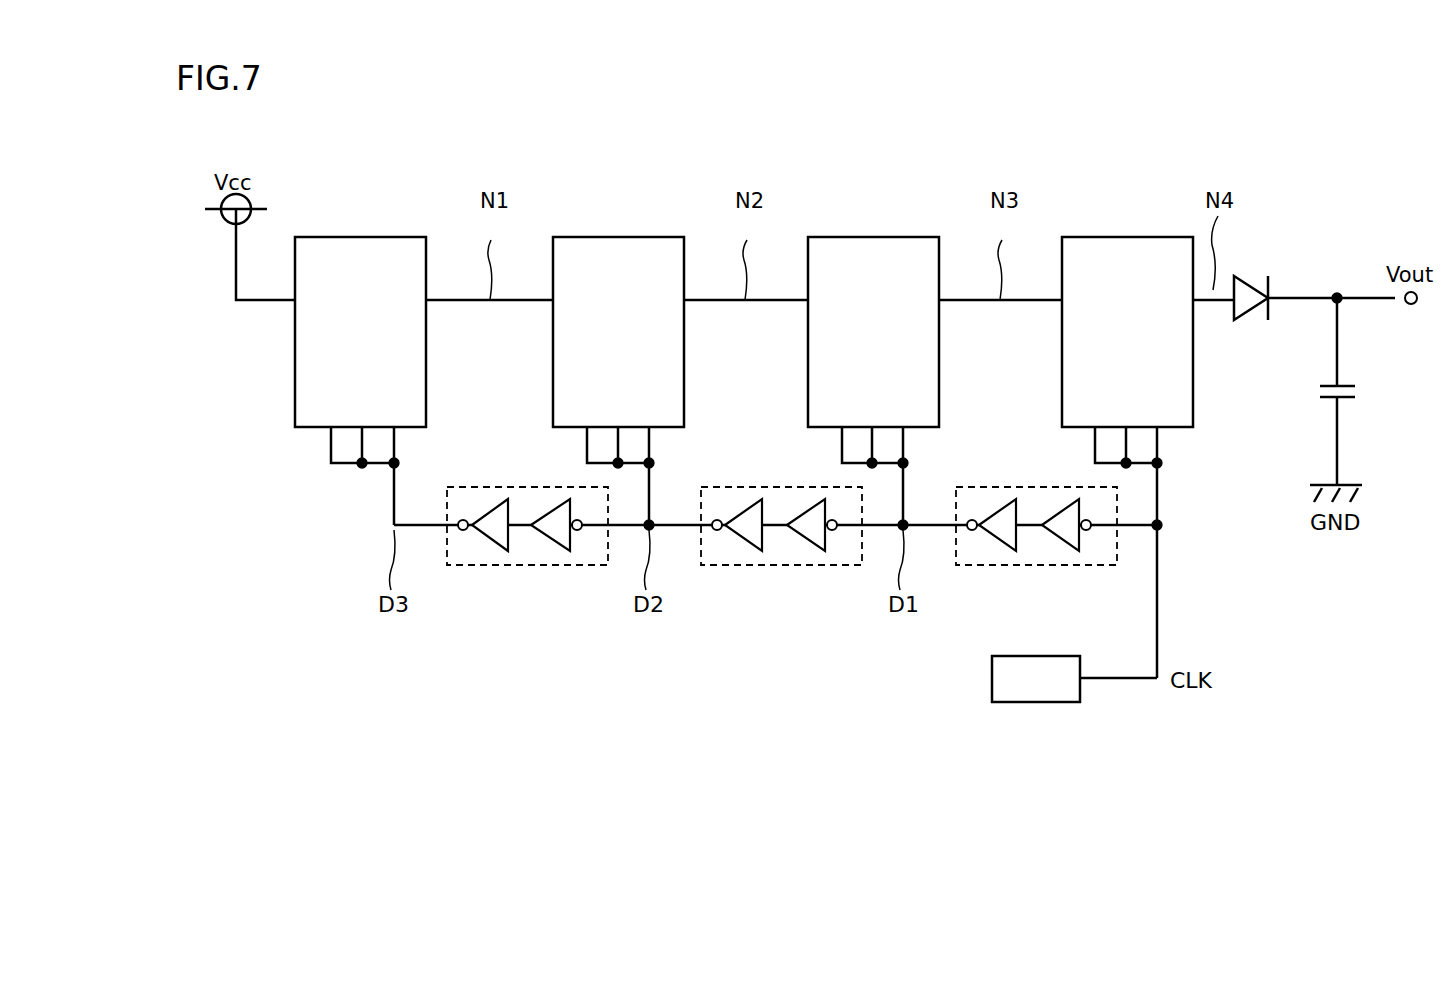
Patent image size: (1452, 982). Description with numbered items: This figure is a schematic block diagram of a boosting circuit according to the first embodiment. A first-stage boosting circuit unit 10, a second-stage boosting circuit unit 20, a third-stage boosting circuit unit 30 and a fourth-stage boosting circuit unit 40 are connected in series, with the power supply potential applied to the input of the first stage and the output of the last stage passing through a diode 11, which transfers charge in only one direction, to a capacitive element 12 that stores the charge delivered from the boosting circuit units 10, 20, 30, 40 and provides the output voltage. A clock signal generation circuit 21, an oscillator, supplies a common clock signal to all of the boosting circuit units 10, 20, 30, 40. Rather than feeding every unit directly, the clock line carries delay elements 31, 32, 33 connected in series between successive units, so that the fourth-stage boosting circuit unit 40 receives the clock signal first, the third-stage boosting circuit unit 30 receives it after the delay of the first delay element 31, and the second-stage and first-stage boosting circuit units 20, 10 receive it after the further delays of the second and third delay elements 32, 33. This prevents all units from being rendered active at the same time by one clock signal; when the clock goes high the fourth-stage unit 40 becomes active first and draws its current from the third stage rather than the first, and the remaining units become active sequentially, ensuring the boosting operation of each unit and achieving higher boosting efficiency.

The first-stage boosting circuit unit 10 is at (386, 236).
The second-stage boosting circuit unit 20 is at (638, 236).
The third-stage boosting circuit unit 30 is at (897, 236).
The fourth-stage boosting circuit unit 40 is at (1153, 236).
The diode 11 is at (1258, 322).
The capacitive element 12 is at (1345, 372).
The clock signal generation circuit 21 is at (1055, 703).
The delay element 31 is at (1036, 566).
The delay element 32 is at (783, 566).
The delay element 33 is at (529, 566).